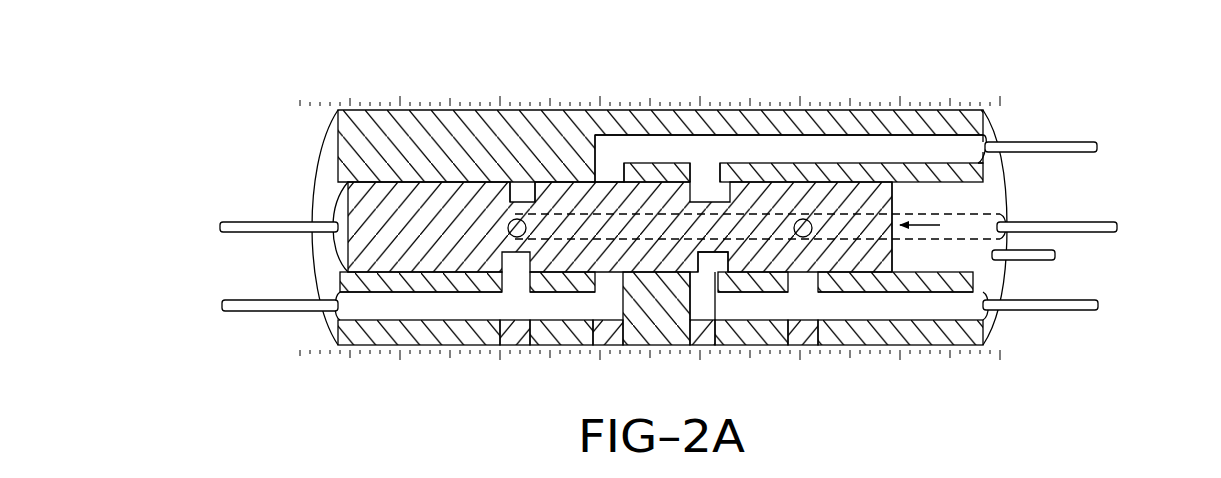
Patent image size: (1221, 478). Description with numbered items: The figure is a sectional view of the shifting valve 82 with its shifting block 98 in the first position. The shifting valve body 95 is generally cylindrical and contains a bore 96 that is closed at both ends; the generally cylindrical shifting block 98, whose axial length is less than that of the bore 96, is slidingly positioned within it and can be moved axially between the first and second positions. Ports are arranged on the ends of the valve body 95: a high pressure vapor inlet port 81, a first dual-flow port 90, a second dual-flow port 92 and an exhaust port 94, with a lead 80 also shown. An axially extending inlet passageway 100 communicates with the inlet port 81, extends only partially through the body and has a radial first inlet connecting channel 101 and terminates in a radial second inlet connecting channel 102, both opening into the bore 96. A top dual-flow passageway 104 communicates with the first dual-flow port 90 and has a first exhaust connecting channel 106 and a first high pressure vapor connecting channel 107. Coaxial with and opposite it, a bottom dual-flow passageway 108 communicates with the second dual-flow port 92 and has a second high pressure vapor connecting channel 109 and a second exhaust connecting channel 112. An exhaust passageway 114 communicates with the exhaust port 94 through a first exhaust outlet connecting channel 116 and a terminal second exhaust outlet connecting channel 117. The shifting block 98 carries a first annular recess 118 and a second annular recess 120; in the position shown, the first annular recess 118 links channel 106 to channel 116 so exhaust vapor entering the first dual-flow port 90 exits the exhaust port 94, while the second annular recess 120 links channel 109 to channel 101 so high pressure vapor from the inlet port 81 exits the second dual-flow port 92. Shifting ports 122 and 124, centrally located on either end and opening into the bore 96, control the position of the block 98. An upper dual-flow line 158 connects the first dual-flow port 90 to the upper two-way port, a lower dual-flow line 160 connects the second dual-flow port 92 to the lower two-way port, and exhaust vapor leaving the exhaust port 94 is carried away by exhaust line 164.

The terminal lead 80 is at (1068, 141).
The high pressure vapor inlet port 81 is at (984, 139).
The shifting valve 82 is at (978, 92).
The first dual-flow port 90 is at (336, 322).
The second dual-flow port 92 is at (982, 318).
The exhaust port 94 is at (1000, 216).
The shifting valve body 95 is at (360, 108).
The bore 96 is at (926, 188).
The shifting block 98 is at (360, 185).
The inlet passageway 100 is at (808, 150).
The first inlet connecting channel 101 is at (707, 167).
The second inlet connecting channel 102 is at (612, 167).
The top dual-flow passageway 104 is at (425, 307).
The first exhaust connecting channel 106 is at (519, 287).
The first high pressure vapor connecting channel 107 is at (615, 285).
The bottom dual-flow passageway 108 is at (871, 305).
The second high pressure vapor connecting channel 109 is at (707, 285).
The second exhaust connecting channel 112 is at (807, 285).
The exhaust passageway 114 is at (960, 210).
The first exhaust outlet connecting channel 116 is at (512, 224).
The second exhaust outlet connecting channel 117 is at (810, 222).
The first annular recess 118 is at (520, 190).
The second annular recess 120 is at (718, 265).
The shifting port 122 is at (245, 222).
The shifting port 124 is at (1030, 262).
The upper dual-flow line 158 is at (262, 300).
The lower dual-flow line 160 is at (1077, 300).
The exhaust line 164 is at (1082, 224).